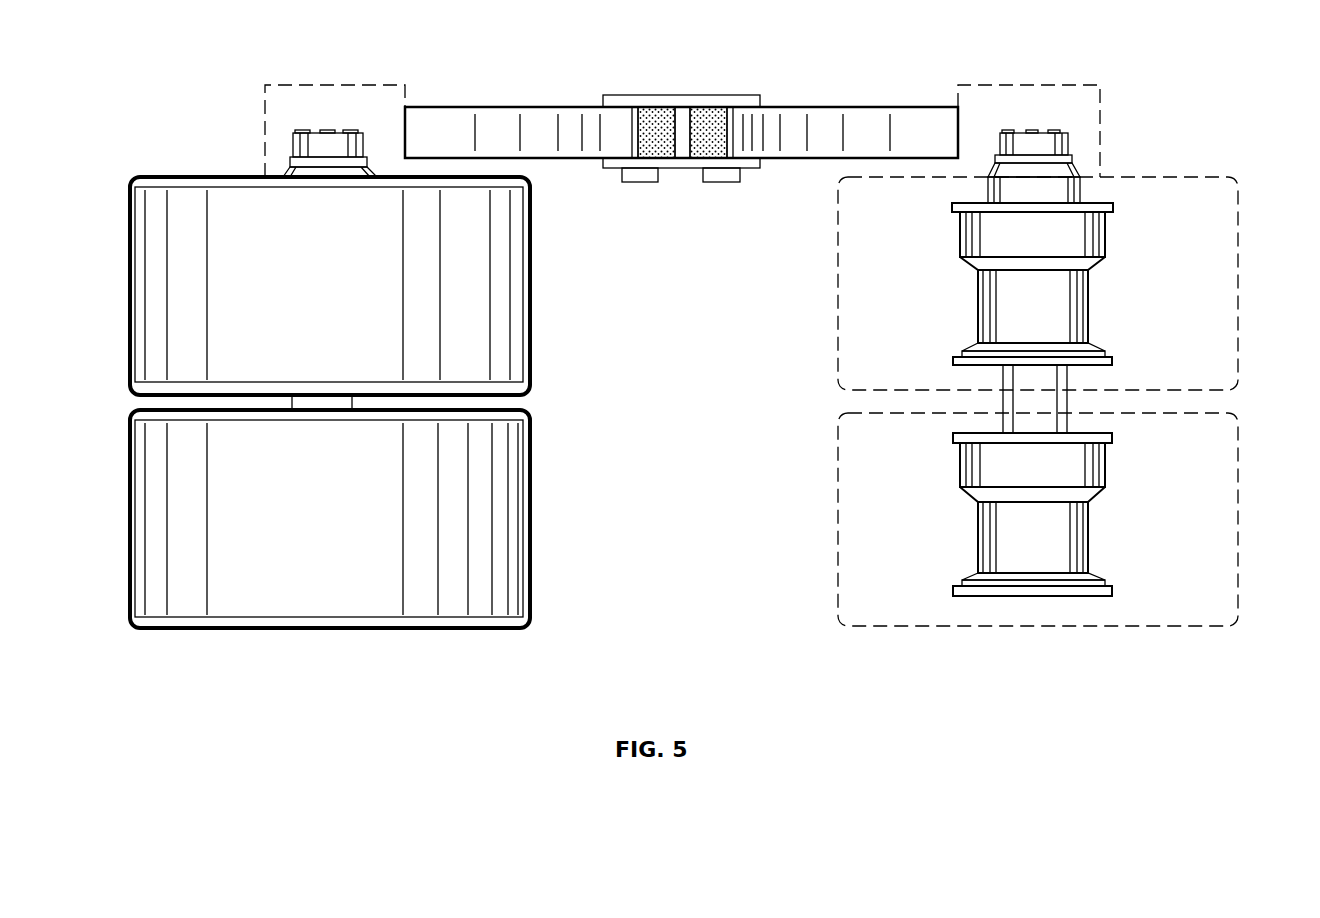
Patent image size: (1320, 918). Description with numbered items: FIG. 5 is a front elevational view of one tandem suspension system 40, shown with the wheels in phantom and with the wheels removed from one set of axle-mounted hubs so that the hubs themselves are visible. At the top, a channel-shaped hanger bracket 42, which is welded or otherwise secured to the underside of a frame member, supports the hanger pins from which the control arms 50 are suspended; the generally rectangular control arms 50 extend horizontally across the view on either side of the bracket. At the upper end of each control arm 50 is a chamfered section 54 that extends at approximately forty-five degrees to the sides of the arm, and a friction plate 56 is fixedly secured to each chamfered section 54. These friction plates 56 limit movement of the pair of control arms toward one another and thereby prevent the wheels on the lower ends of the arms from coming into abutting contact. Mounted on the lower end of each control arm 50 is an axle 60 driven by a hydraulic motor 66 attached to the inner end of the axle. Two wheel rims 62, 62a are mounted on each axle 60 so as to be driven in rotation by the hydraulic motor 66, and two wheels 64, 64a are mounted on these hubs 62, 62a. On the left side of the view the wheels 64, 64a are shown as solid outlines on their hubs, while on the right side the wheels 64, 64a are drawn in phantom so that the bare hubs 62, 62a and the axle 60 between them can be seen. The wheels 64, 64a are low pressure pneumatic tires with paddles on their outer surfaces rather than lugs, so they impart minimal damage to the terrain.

The tandem suspension system 40 is at (704, 127).
The channel-shaped hanger bracket 42 is at (653, 95).
The control arm 50 is at (507, 88).
The chamfered section 54 is at (643, 100).
The friction plate 56 is at (707, 100).
The axle 60 is at (356, 395).
The wheel rim 62 is at (1088, 305).
The wheel rim 62a is at (1088, 537).
The wheel 64 is at (530, 265).
The wheel 64a is at (530, 503).
The hydraulic motor 66 is at (284, 80).